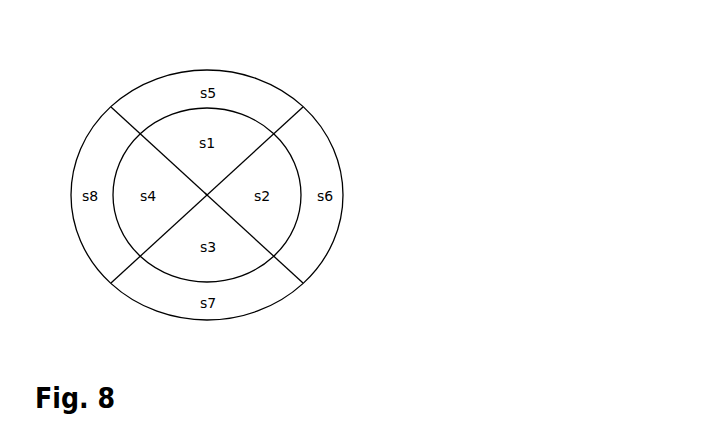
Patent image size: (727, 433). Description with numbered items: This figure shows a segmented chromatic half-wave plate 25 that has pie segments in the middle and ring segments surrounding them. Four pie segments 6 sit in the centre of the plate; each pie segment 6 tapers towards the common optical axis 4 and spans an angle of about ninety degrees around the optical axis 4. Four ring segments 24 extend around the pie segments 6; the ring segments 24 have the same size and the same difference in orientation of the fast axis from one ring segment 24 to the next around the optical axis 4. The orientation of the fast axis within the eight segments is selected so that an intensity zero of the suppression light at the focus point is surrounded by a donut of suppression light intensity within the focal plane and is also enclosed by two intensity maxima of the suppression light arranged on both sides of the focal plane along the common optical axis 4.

The segmented chromatic λ/2 plate 25 is at (96, 71).
The ring segment 24 is at (320, 145).
The pie segment 6 is at (247, 135).
The optical axis 4 is at (212, 204).